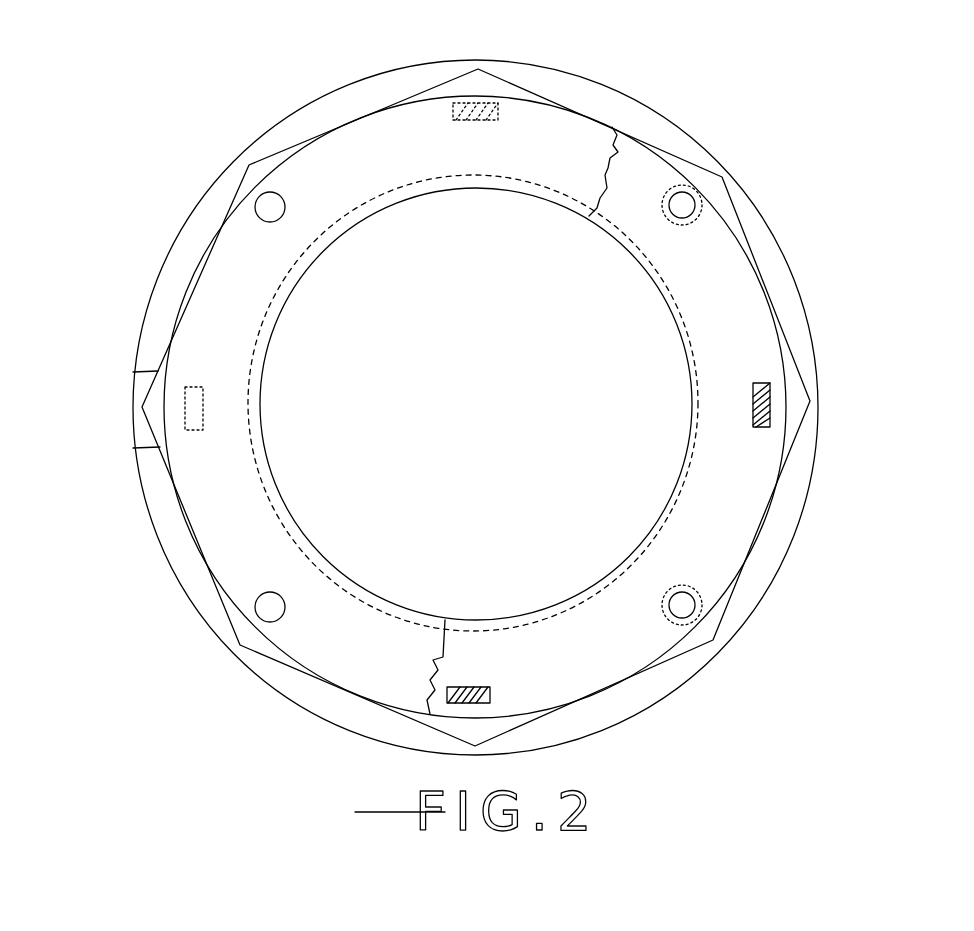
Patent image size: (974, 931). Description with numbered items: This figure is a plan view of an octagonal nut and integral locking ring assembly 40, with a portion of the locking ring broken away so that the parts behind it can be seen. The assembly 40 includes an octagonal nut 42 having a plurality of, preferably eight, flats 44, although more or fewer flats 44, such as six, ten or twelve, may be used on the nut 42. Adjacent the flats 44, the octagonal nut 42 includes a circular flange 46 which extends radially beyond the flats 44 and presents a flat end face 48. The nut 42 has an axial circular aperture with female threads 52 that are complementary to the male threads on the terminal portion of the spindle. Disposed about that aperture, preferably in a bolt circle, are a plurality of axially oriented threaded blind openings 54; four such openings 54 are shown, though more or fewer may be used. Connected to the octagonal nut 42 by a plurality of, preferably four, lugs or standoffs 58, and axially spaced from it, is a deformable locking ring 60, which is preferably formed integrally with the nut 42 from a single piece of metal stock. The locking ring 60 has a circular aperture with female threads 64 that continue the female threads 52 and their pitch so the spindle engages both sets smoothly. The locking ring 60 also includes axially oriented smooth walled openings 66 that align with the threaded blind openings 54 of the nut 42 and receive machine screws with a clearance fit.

The octagonal nut and integral locking ring assembly 40 is at (503, 395).
The octagonal nut 42 is at (795, 399).
The flats 44 is at (133, 372).
The circular flange 46 is at (187, 247).
The end face 48 is at (345, 86).
The female threads 52 is at (648, 259).
The threaded blind openings 54 is at (690, 190).
The standoffs 58 is at (203, 405).
The deformable locking ring 60 is at (227, 523).
The female threads 64 is at (410, 622).
The smooth walled openings 66 is at (259, 193).